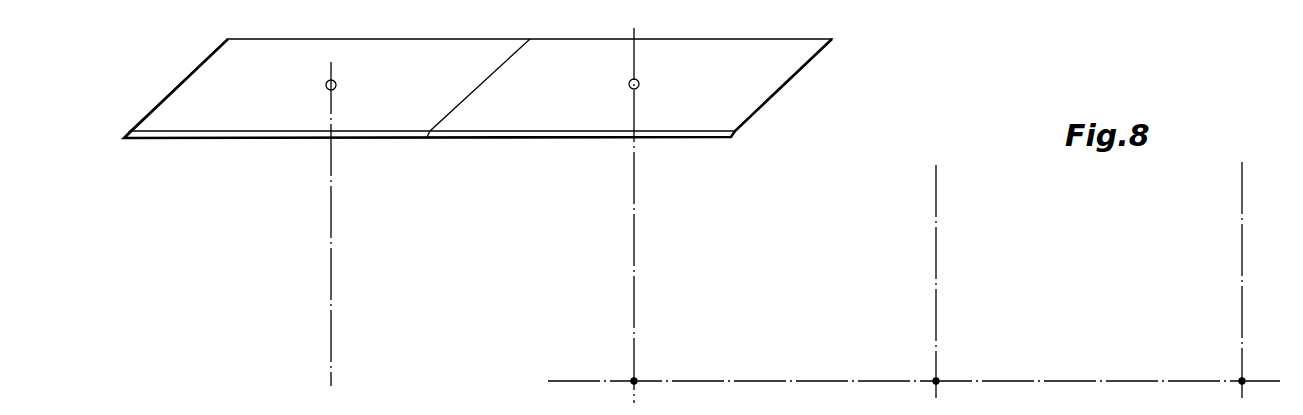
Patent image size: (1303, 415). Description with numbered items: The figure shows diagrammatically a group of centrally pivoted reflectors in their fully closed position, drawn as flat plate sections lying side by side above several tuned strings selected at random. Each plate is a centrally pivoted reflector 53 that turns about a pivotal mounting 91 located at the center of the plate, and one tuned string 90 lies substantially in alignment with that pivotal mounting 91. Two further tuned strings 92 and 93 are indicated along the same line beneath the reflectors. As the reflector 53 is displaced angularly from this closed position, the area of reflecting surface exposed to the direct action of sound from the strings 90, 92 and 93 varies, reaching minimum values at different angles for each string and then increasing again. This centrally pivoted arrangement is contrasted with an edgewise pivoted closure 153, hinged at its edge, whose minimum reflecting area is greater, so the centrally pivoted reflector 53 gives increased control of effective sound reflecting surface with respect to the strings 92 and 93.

The centrally pivoted reflector 53 is at (494, 27).
The pivotal mounting 91 is at (337, 84).
The tuned string 90 is at (637, 378).
The tuned string 92 is at (940, 377).
The tuned string 93 is at (1246, 378).
The edgewise pivoted closure 153 is at (499, 404).